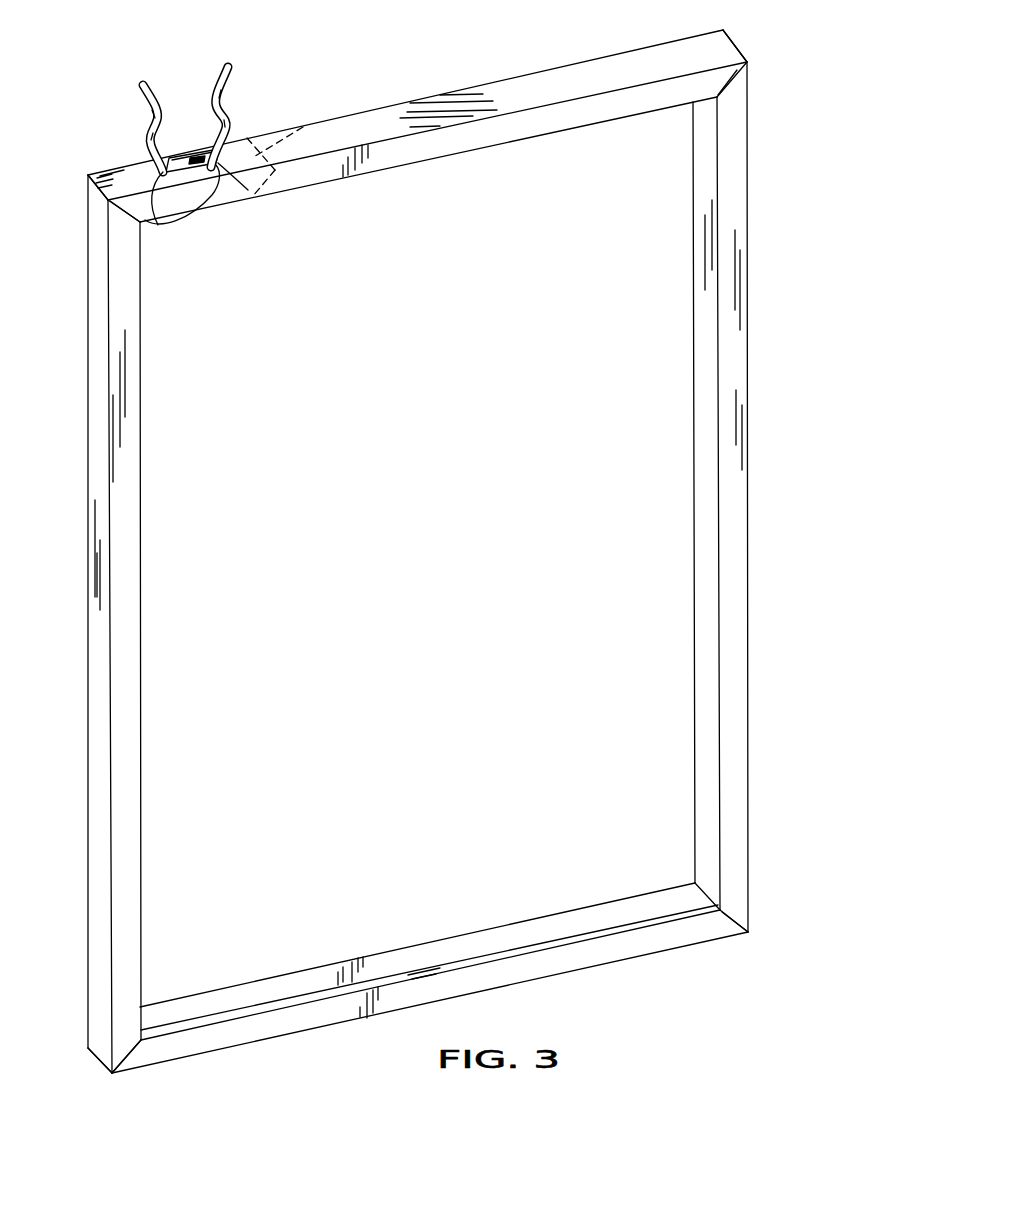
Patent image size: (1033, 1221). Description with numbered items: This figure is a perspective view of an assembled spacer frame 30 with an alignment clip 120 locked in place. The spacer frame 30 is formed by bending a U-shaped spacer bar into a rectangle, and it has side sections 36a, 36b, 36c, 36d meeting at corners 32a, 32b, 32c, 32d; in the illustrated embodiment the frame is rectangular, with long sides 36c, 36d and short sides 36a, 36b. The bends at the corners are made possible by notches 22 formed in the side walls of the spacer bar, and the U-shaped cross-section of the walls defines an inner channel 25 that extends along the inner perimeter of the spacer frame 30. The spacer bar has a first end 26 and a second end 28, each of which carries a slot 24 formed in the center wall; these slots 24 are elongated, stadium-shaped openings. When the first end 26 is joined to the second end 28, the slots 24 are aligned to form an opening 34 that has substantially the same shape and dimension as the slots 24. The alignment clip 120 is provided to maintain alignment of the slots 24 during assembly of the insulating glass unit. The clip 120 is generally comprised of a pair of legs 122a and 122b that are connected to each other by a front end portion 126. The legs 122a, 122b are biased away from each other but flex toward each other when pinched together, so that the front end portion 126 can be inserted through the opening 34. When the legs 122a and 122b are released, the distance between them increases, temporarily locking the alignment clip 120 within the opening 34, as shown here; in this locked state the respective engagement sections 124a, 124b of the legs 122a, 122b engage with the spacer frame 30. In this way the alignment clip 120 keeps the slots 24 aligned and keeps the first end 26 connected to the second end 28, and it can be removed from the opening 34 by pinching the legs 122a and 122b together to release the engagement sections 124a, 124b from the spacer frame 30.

The spacer frame 30 is at (592, 42).
The notches 22 is at (128, 220).
The slots 24 is at (200, 162).
The inner channel 25 is at (296, 988).
The first end 26 is at (304, 126).
The second end 28 is at (120, 173).
The corner 32a is at (90, 194).
The corner 32b is at (737, 47).
The corner 32c is at (96, 1058).
The corner 32d is at (750, 932).
The opening 34 is at (195, 143).
The side section 36a is at (528, 86).
The side section 36b is at (622, 952).
The side section 36c is at (118, 722).
The side section 36d is at (745, 510).
The alignment clip 120 is at (198, 169).
The leg 122a is at (150, 140).
The leg 122b is at (230, 120).
The engagement section 124a is at (158, 225).
The engagement section 124b is at (248, 190).
The front end portion 126 is at (190, 222).